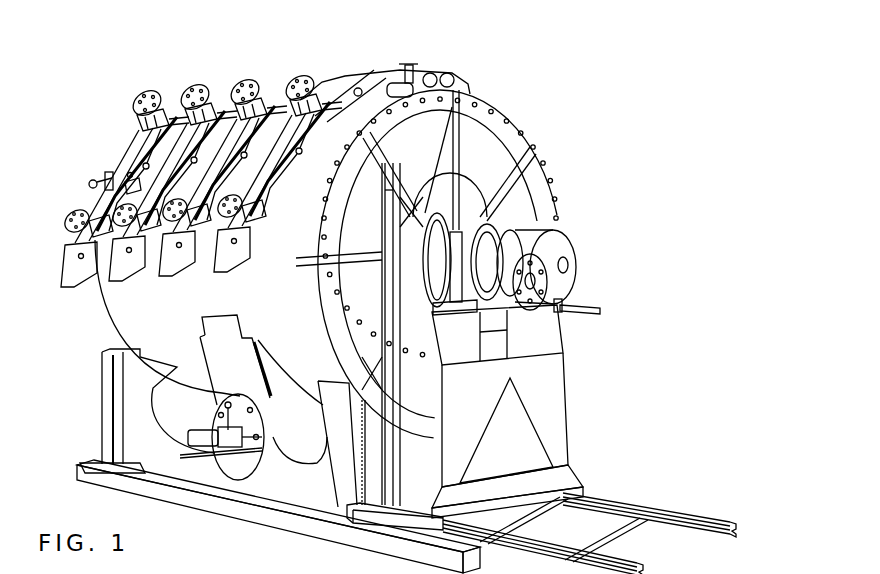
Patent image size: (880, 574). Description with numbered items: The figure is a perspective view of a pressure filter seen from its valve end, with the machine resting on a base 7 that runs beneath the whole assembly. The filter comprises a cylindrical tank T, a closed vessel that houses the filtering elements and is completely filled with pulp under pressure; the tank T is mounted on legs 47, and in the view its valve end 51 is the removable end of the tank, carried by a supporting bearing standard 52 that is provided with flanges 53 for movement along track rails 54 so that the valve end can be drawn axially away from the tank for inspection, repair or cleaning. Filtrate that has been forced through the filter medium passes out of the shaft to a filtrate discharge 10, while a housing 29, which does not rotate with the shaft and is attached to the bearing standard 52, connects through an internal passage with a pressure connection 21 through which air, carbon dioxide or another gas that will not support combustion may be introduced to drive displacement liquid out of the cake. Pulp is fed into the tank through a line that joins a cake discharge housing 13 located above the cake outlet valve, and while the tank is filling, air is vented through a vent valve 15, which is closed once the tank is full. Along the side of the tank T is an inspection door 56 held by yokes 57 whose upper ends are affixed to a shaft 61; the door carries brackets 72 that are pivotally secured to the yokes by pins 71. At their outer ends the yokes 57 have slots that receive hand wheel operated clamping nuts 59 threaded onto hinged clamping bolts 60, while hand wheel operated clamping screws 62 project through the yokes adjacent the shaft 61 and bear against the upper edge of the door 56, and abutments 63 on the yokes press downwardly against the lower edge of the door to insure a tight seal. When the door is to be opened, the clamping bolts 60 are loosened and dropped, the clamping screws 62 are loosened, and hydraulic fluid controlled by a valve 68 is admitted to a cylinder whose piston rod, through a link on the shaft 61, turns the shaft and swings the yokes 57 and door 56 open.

The base beam 7 is at (278, 517).
The filtrate discharge 10 is at (532, 303).
The cake discharge housing 13 is at (272, 450).
The vent valve 15 is at (413, 78).
The pressure connection 21 is at (583, 312).
The housing 29 is at (572, 238).
The legs 47 is at (99, 424).
The valve end 51 is at (488, 148).
The bearing standard 52 is at (553, 396).
The flanges 53 is at (407, 507).
The track rails 54 is at (630, 502).
The inspection door 56 is at (337, 103).
The yokes 57 is at (143, 128).
The clamping nuts 59 is at (72, 218).
The clamping bolts 60 is at (256, 285).
The shaft 61 is at (380, 78).
The clamping screws 62 is at (150, 95).
The abutments 63 is at (282, 218).
The valve 68 is at (93, 182).
The pins 71 is at (318, 143).
The brackets 72 is at (262, 165).
The tank T is at (137, 318).